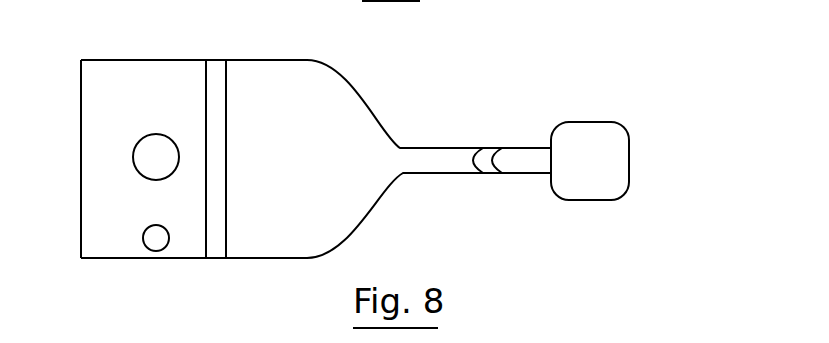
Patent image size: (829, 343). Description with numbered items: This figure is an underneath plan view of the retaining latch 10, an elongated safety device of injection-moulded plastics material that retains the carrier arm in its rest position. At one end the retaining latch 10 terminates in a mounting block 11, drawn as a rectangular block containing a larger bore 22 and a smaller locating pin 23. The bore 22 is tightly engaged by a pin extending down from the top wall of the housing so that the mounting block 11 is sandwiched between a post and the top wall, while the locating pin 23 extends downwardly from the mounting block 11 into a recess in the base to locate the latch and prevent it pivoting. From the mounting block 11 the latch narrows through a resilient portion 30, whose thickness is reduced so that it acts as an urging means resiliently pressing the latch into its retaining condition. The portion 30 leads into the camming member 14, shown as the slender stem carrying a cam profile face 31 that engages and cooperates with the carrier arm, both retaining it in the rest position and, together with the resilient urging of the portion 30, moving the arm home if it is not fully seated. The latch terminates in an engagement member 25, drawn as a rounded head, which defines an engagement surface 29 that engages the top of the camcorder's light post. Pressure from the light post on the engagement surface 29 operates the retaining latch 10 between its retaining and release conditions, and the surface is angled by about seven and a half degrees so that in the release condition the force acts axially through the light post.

The retaining latch 10 is at (252, 75).
The mounting block 11 is at (130, 70).
The camming member 14 is at (520, 153).
The bore 22 is at (133, 163).
The locating pin 23 is at (146, 250).
The engagement member 25 is at (587, 188).
The engagement surface 29 is at (628, 172).
The resilient portion 30 is at (368, 108).
The cam profile face 31 is at (483, 160).